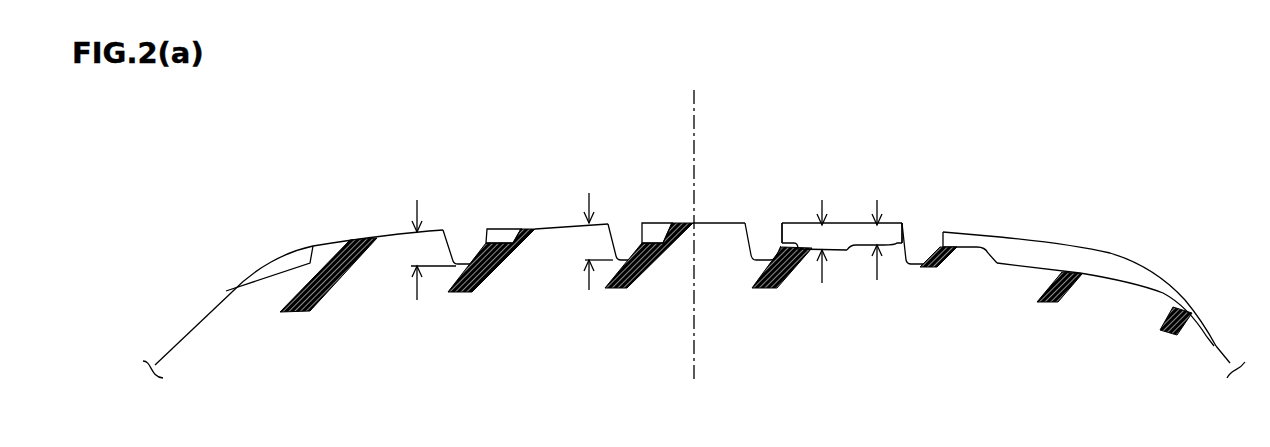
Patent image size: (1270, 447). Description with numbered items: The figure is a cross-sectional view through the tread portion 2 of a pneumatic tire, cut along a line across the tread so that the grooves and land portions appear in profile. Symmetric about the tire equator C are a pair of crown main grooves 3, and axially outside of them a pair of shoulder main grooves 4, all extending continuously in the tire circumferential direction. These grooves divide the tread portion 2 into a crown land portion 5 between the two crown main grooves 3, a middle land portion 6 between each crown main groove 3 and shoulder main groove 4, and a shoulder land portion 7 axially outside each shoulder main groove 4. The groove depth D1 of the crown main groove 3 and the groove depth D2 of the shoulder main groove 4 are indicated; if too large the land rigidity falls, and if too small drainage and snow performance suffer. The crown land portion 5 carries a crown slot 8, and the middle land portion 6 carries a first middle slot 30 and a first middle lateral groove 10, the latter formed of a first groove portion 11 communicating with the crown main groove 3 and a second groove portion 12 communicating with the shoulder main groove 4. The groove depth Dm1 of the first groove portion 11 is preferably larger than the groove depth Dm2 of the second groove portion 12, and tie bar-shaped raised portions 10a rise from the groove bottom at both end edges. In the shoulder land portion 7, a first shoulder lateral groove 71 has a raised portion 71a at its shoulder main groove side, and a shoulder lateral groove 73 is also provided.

The tread portion 2 is at (1168, 180).
The crown main groove 3 is at (627, 233).
The shoulder main groove 4 is at (467, 242).
The crown land portion 5 is at (720, 223).
The middle land portion 6 is at (562, 223).
The shoulder land portion 7 is at (370, 235).
The crown slot 8 is at (658, 233).
The first middle lateral groove 10 is at (843, 226).
The raised portion 10a is at (780, 224).
The first groove portion 11 is at (802, 233).
The second groove portion 12 is at (883, 233).
The first middle slot 30 is at (499, 235).
The first shoulder lateral groove 71 is at (1027, 250).
The raised portion 71a is at (976, 246).
The shoulder lateral groove 73 is at (285, 258).
The tire equator C is at (694, 217).
The groove depth of the crown main groove D1 is at (588, 243).
The groove depth of the shoulder main groove D2 is at (416, 253).
The groove depth of the first groove portion Dm1 is at (823, 240).
The groove depth of the second groove portion Dm2 is at (876, 240).